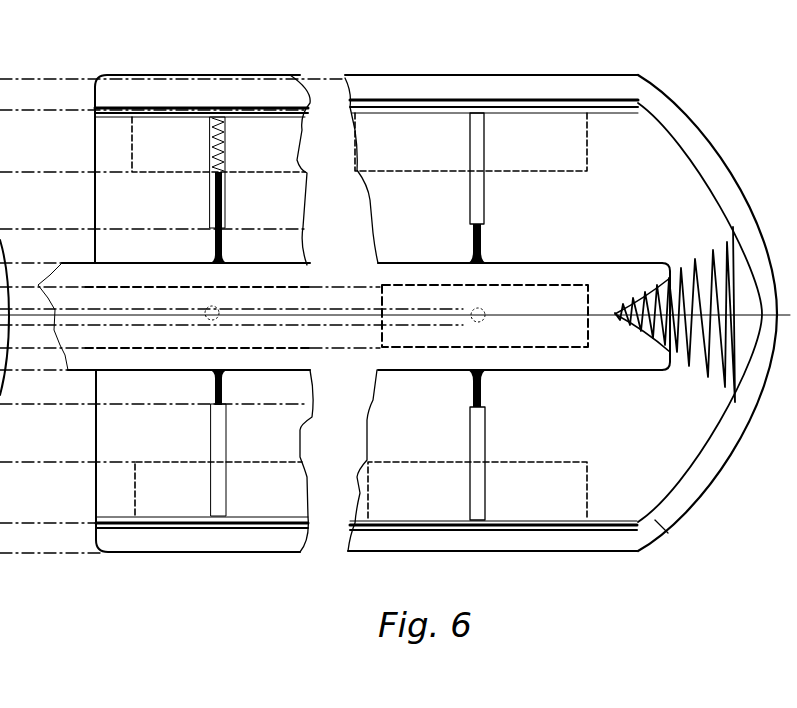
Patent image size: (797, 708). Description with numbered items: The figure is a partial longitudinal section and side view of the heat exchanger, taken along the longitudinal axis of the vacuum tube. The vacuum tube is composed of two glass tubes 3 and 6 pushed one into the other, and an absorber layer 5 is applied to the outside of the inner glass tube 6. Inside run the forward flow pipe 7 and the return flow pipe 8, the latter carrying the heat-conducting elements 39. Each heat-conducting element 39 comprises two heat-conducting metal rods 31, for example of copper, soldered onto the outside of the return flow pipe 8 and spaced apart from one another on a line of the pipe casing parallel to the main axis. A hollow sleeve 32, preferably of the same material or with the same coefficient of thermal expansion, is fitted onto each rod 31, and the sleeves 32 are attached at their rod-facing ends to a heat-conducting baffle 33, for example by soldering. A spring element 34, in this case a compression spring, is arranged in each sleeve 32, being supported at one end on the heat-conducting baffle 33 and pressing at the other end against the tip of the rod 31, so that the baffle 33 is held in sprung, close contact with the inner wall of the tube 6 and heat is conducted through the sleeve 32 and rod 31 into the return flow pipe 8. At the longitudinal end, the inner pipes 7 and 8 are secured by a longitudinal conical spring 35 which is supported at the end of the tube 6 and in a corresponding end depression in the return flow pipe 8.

The glass tube 3 is at (705, 500).
The absorber layer 5 is at (577, 530).
The inner glass tube 6 is at (652, 520).
The forward flow pipe 7 is at (85, 287).
The return flow pipe 8 is at (128, 264).
The heat-conducting metal rod 31 is at (483, 238).
The hollow sleeve 32 is at (482, 150).
The heat-conducting baffle 33 is at (218, 144).
The spring element 34 is at (210, 137).
The longitudinal conical spring 35 is at (702, 272).
The heat-conducting element 39 is at (455, 140).